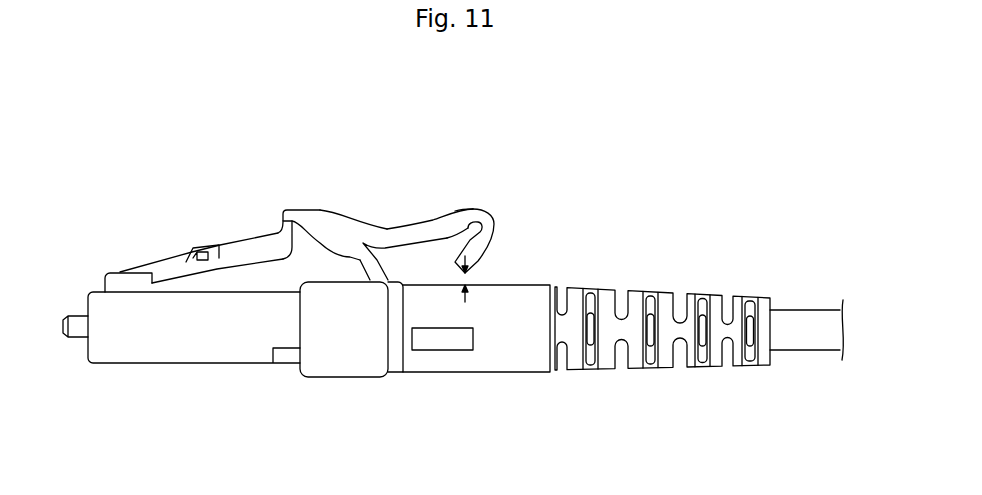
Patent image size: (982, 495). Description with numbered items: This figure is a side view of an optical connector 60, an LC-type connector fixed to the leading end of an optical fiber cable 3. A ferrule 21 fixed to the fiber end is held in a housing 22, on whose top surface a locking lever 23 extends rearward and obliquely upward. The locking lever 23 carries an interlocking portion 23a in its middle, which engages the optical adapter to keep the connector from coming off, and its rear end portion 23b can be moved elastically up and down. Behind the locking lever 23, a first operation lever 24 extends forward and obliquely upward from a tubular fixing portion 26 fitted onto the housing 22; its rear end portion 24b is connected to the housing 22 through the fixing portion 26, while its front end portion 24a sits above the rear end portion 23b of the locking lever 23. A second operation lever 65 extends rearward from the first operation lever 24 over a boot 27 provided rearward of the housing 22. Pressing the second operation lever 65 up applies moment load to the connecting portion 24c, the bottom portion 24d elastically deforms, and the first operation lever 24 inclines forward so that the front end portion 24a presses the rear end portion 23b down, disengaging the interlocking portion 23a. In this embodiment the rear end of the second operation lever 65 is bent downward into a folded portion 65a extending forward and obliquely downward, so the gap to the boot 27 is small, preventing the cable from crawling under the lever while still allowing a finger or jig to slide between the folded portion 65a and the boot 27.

The optical fiber cable 3 is at (805, 318).
The ferrule 21 is at (76, 321).
The housing 22 is at (198, 352).
The locking lever 23 is at (233, 240).
The interlocking portion 23a is at (226, 243).
The rear end portion 23b is at (271, 232).
The first operation lever 24 is at (313, 209).
The front end portion 24a is at (293, 209).
The rear end portion 24b is at (401, 358).
The connecting portion 24c is at (337, 228).
The bottom portion 24d is at (355, 263).
The fixing portion 26 is at (357, 361).
The boot 27 is at (509, 360).
The optical connector 60 is at (472, 188).
The second operation lever 65 is at (432, 222).
The folded portion 65a is at (481, 258).